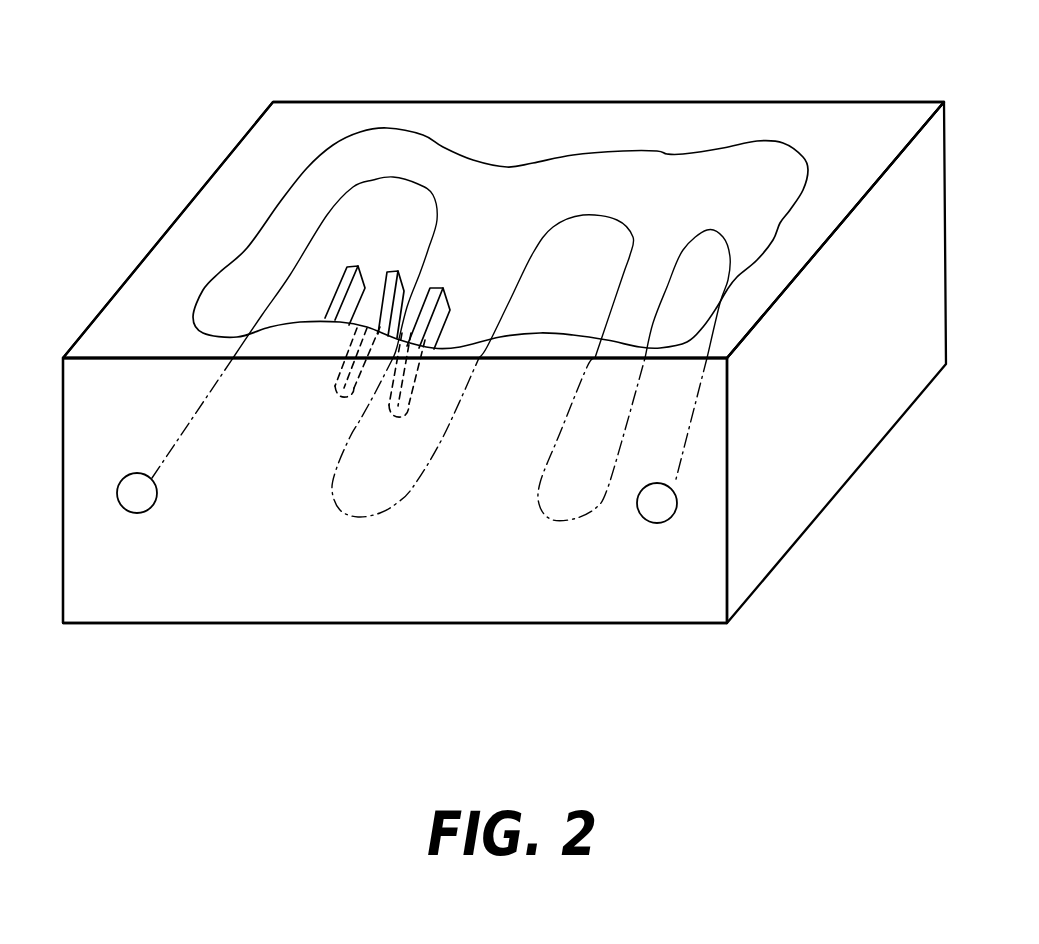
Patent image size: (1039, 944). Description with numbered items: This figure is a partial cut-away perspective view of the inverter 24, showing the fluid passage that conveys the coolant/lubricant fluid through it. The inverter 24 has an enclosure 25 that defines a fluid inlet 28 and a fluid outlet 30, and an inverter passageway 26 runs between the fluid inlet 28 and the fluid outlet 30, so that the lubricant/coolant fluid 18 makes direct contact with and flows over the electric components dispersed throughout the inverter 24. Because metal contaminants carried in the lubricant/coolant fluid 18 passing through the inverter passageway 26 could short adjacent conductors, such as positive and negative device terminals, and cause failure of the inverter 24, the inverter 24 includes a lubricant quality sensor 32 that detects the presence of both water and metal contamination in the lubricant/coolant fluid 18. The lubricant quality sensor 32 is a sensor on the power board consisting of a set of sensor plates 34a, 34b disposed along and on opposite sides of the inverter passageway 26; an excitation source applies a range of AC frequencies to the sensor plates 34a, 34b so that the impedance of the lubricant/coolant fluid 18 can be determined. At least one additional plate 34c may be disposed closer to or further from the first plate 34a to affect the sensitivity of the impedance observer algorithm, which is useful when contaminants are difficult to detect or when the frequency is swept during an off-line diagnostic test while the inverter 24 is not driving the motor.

The lubricant/coolant fluid 18 is at (124, 519).
The inverter 24 is at (918, 442).
The enclosure 25 is at (898, 121).
The inverter passageway 26 is at (197, 413).
The fluid inlet 28 is at (147, 498).
The fluid outlet 30 is at (650, 517).
The lubricant quality sensor 32 is at (360, 256).
The sensor plate 34a is at (392, 270).
The sensor plate 34b is at (403, 415).
The additional plate 34c is at (337, 290).